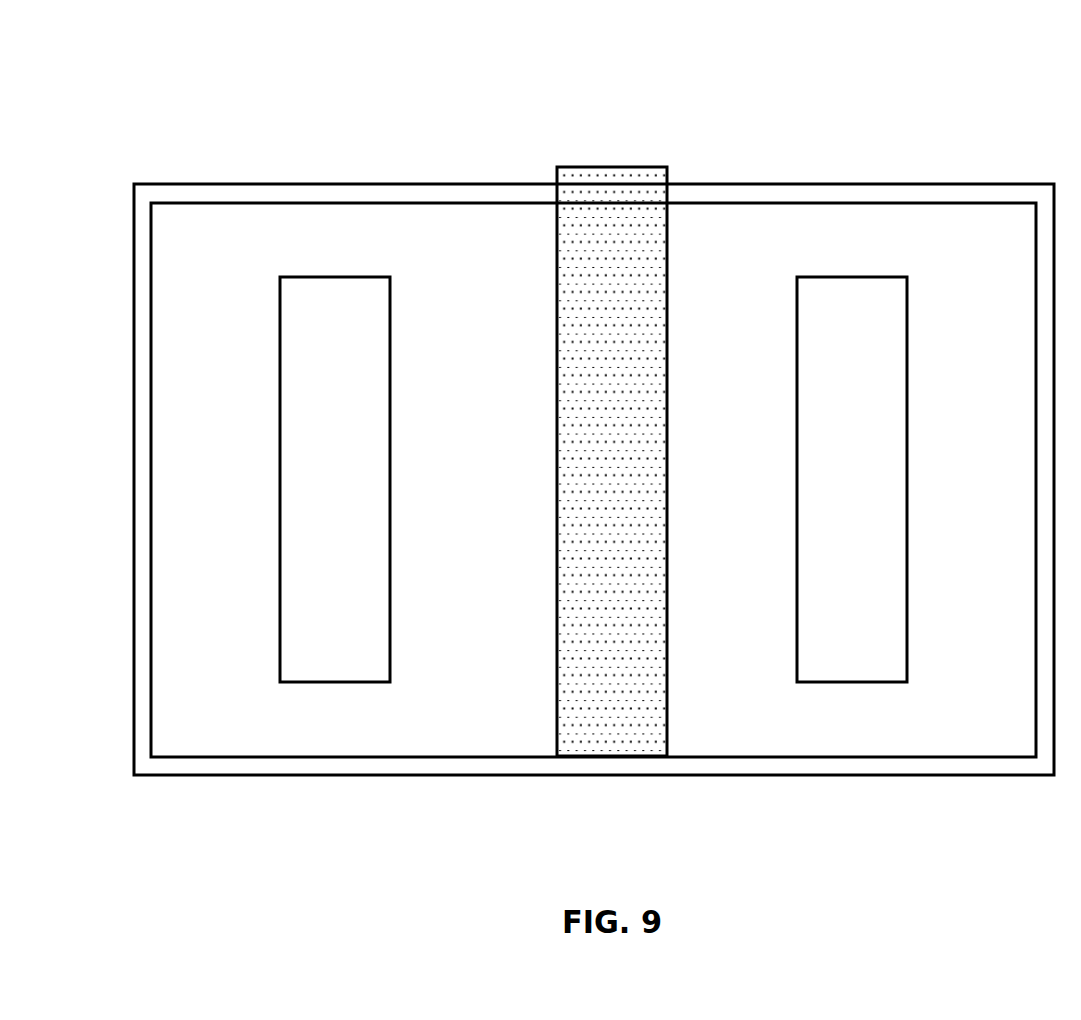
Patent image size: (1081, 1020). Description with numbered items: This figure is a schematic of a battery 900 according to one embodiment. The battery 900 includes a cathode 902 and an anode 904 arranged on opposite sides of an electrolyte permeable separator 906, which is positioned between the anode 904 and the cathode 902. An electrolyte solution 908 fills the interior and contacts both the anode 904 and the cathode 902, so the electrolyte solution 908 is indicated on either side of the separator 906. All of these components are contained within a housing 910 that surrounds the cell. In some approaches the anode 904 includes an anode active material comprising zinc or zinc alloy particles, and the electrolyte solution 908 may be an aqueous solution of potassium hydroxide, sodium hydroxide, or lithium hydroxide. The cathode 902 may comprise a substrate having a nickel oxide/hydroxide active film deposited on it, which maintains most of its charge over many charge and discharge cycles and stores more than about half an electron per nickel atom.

The battery 900 is at (218, 58).
The cathode 902 is at (355, 361).
The anode 904 is at (871, 361).
The electrolyte permeable separator 906 is at (612, 172).
The electrolyte solution 908 is at (463, 738).
The housing 910 is at (188, 765).